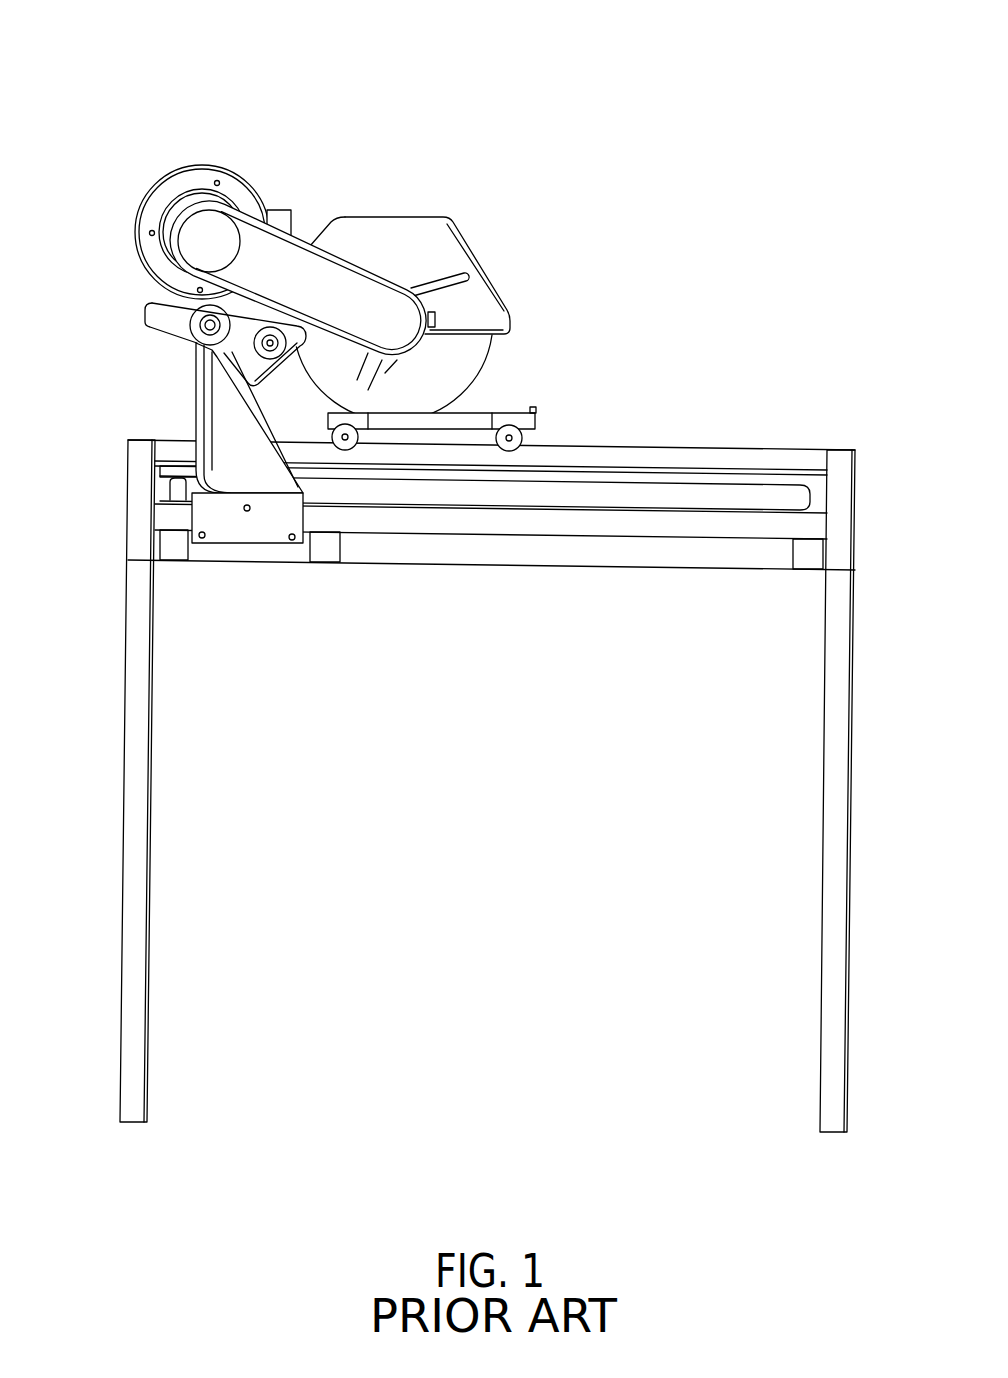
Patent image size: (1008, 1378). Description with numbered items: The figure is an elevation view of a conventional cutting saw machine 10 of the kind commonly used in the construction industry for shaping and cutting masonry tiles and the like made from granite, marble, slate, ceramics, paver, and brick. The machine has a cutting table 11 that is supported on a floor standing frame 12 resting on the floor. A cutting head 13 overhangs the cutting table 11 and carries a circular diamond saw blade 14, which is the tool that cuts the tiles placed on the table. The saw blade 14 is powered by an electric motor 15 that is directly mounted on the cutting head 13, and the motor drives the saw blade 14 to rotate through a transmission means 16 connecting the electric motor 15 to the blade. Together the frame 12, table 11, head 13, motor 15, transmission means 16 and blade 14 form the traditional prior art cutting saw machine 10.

The cutting saw machine 10 is at (366, 148).
The cutting table 11 is at (705, 457).
The floor standing frame 12 is at (143, 785).
The cutting head 13 is at (230, 352).
The circular diamond saw blade 14 is at (455, 372).
The electric motor 15 is at (184, 188).
The transmission means 16 is at (345, 288).